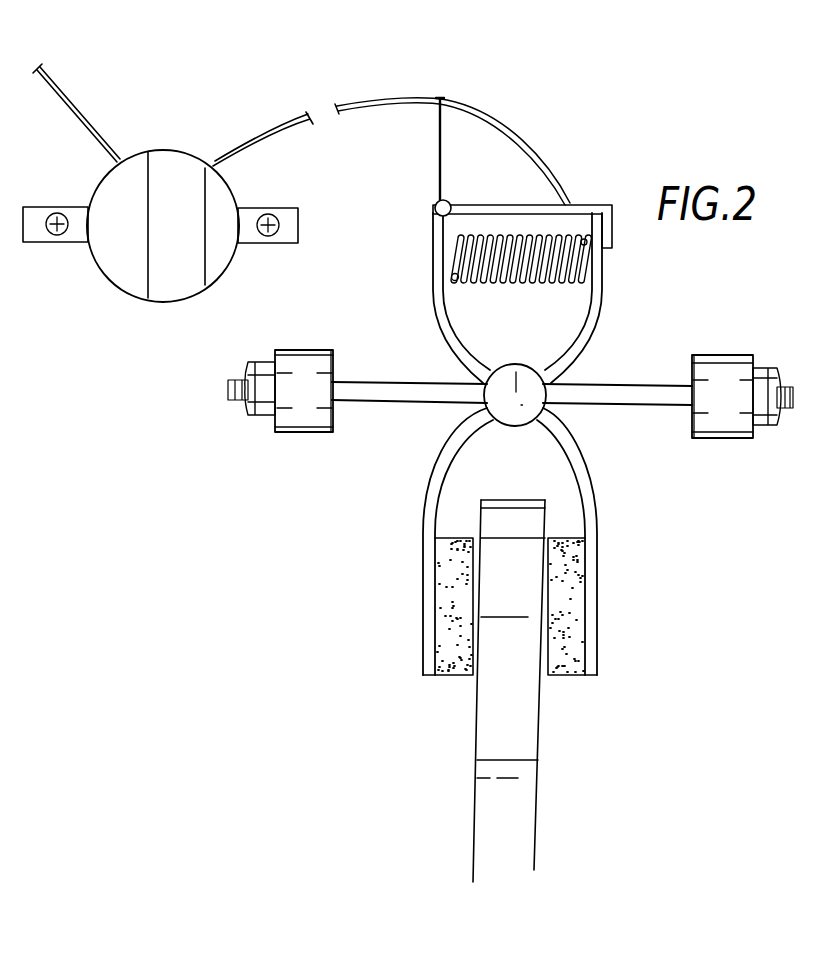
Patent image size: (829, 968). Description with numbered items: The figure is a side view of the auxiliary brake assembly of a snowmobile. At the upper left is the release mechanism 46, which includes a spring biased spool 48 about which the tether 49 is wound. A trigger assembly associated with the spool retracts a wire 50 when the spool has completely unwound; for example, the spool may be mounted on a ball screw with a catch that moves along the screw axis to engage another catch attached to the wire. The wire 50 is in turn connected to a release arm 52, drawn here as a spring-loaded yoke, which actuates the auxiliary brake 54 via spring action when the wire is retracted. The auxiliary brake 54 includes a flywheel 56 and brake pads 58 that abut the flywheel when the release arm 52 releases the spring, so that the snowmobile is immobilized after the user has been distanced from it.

The release mechanism 46 is at (187, 137).
The spring biased spool 48 is at (133, 190).
The tether 49 is at (67, 103).
The wire 50 is at (463, 107).
The release arm 52 is at (580, 203).
The auxiliary brake 54 is at (612, 531).
The flywheel 56 is at (523, 745).
The brake pads 58 is at (567, 627).